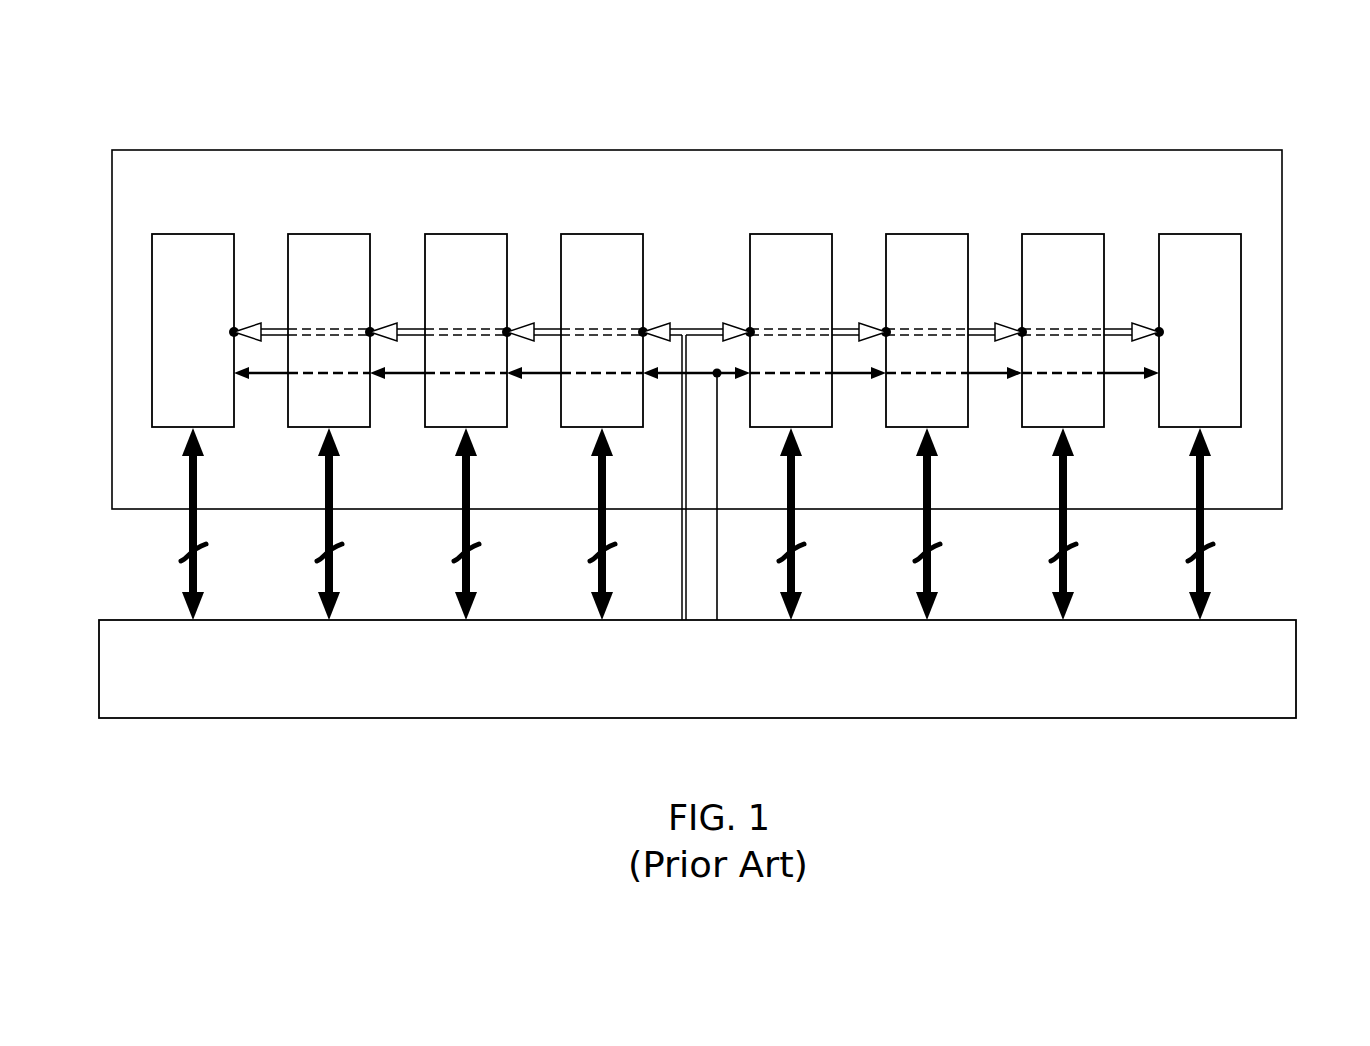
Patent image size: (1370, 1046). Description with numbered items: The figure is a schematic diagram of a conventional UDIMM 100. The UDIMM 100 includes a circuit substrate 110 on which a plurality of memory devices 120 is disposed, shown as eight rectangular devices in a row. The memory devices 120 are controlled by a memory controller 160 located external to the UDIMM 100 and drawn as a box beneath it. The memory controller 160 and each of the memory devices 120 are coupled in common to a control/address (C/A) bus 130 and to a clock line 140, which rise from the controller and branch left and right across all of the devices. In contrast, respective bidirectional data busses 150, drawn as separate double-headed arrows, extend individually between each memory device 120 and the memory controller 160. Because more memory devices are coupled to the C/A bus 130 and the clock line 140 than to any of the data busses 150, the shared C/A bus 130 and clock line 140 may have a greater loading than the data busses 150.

The UDIMM 100 is at (1218, 78).
The circuit substrate 110 is at (1282, 200).
The memory devices 120 is at (195, 234).
The control/address (C/A) bus 130 is at (682, 531).
The clock line 140 is at (717, 581).
The bidirectional data busses 150 is at (1205, 532).
The memory controller 160 is at (1296, 667).